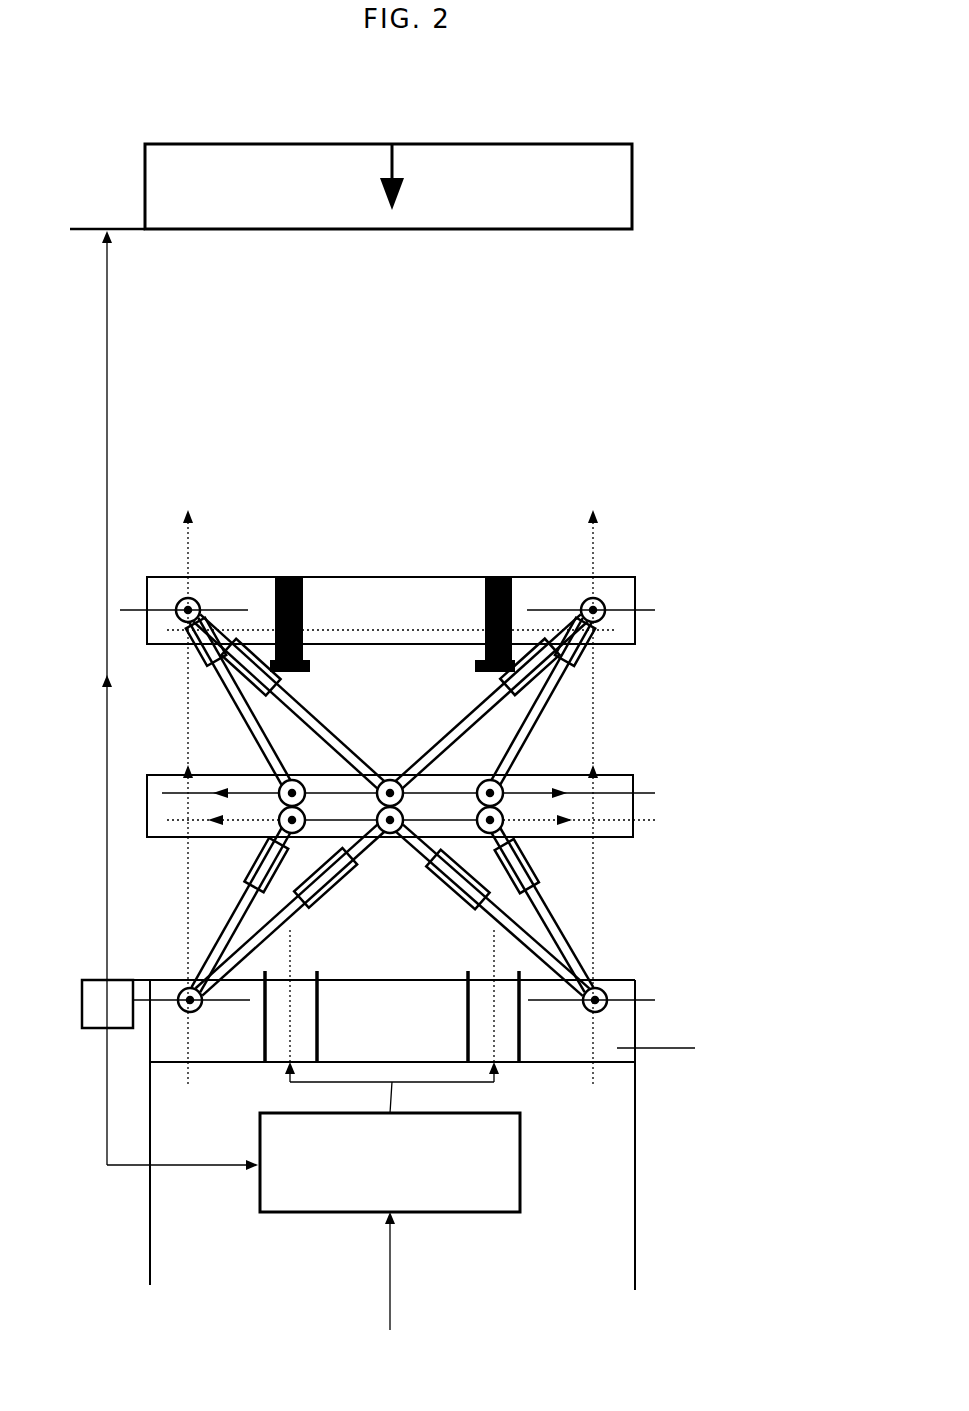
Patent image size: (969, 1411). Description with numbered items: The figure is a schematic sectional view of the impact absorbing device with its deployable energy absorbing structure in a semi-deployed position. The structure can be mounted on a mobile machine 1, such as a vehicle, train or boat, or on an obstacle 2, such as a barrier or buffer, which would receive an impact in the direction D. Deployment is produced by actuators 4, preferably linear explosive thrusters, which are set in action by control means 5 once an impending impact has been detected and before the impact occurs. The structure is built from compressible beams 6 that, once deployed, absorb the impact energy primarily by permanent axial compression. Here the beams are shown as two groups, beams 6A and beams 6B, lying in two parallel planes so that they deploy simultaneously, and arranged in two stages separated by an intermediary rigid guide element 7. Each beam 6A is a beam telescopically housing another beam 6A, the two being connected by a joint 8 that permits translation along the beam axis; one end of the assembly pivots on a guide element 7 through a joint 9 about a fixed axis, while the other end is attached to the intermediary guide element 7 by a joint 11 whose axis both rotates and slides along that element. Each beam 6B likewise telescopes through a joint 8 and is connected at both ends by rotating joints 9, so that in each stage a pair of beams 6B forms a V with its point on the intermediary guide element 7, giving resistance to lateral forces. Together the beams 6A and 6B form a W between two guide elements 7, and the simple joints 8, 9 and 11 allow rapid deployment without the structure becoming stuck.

The mobile machine 1 is at (625, 1102).
The obstacle 2 is at (620, 181).
The actuators 4 is at (545, 590).
The control means 5 is at (90, 1000).
The compressible beams 6 is at (457, 805).
The beams 6A is at (232, 716).
The beams 6B is at (345, 736).
The rigid guide elements 7 is at (625, 623).
The joints 8 is at (530, 840).
The joints 9 is at (183, 605).
The joints 11 is at (272, 800).